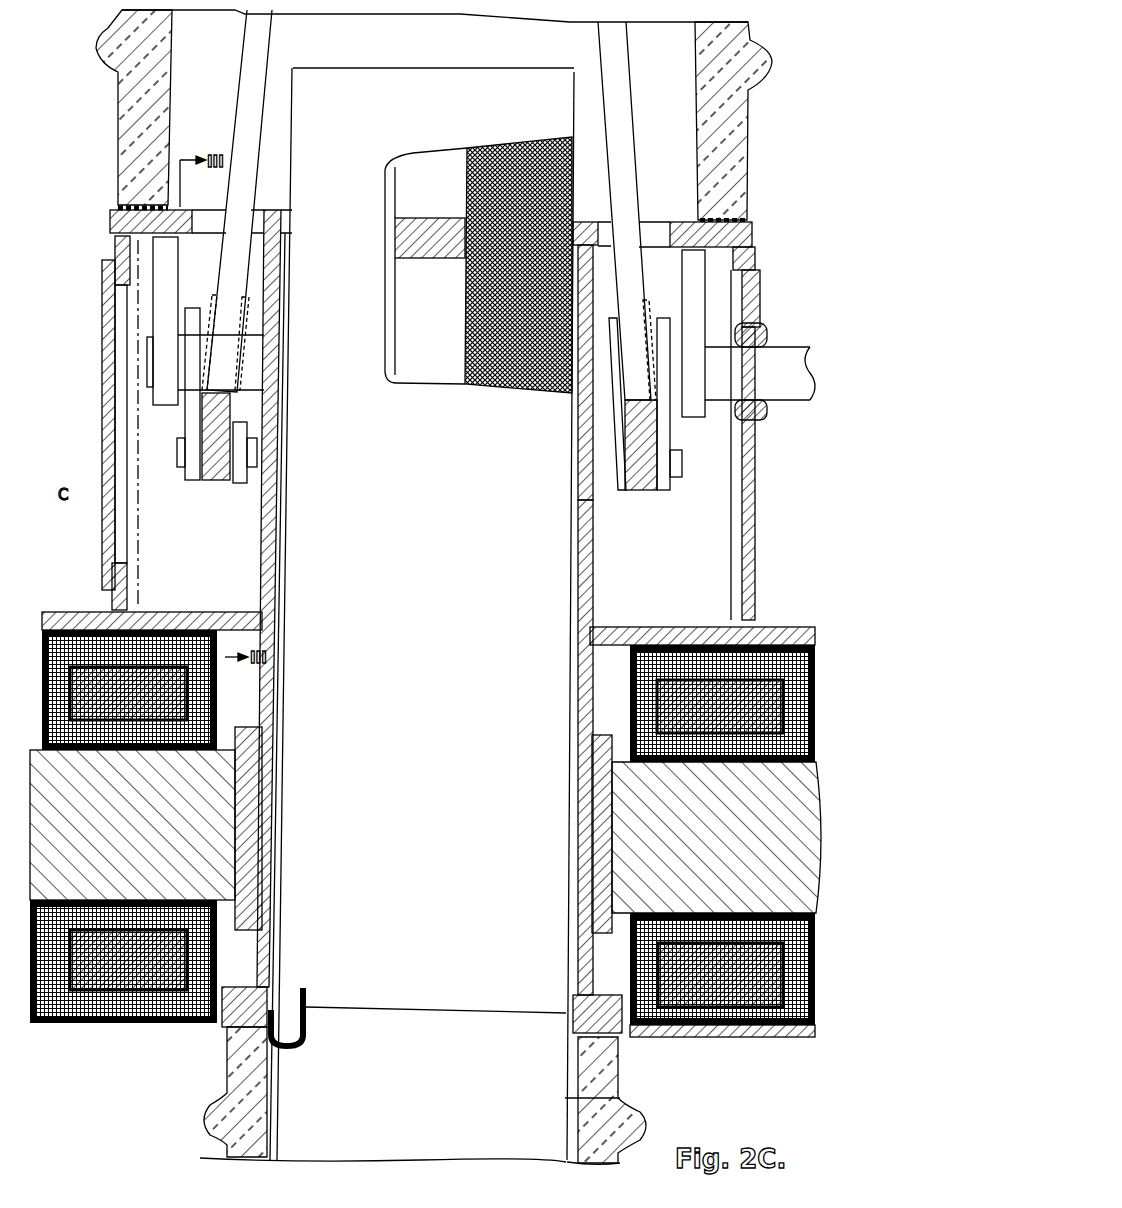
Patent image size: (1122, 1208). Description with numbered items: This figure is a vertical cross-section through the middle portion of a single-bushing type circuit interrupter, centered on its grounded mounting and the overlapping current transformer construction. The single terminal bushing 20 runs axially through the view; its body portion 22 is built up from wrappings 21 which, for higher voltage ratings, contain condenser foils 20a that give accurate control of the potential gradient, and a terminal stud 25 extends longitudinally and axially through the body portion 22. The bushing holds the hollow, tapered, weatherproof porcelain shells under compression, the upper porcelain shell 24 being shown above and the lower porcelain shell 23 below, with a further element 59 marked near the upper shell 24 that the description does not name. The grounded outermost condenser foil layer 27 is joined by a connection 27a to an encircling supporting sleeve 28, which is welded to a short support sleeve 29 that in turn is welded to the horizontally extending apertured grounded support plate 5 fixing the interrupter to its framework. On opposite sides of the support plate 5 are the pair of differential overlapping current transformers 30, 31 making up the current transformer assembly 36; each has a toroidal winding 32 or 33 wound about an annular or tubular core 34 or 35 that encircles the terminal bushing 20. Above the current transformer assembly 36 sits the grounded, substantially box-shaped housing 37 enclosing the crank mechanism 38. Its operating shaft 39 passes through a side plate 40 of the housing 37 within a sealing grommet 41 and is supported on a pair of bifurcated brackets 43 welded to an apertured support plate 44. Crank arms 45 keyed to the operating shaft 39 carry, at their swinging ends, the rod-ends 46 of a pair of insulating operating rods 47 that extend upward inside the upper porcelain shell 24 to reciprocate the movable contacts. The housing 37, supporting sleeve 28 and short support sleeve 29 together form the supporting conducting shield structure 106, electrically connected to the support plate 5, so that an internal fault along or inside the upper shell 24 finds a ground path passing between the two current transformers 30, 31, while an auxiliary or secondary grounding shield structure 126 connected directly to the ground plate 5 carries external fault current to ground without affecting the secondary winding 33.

The apertured grounded support plate 5 is at (622, 791).
The single terminal bushing 20 is at (322, 726).
The condenser foils 20a is at (470, 150).
The wrappings 21 is at (493, 385).
The body portion 22 is at (606, 1098).
The lower porcelain shell 23 is at (208, 1112).
The upper porcelain shell 24 is at (749, 171).
The terminal stud 25 is at (437, 226).
The outermost condenser foil layer 27 is at (581, 224).
The connection 27a is at (306, 1008).
The supporting sleeve 28 is at (594, 585).
The short support sleeve 29 is at (605, 738).
The current transformer 30 is at (632, 686).
The current transformer 31 is at (631, 980).
The toroidal winding 32 is at (631, 660).
The toroidal winding 33 is at (631, 955).
The annular core 34 is at (683, 632).
The annular core 35 is at (745, 1030).
The current transformer assembly 36 is at (559, 849).
The box-shaped housing 37 is at (756, 507).
The crank mechanism 38 is at (220, 260).
The operating shaft 39 is at (785, 400).
The side plate 40 is at (760, 298).
The sealing grommet 41 is at (766, 332).
The bifurcated brackets 43 is at (176, 299).
The apertured support plate 44 is at (753, 241).
The crank arms 45 is at (188, 424).
The rod-ends 46 is at (211, 475).
The insulating operating rods 47 is at (247, 104).
The seal ring 59 is at (97, 187).
The supporting conducting shield structure 106 is at (236, 602).
The secondary grounding shield structure 126 is at (140, 1023).